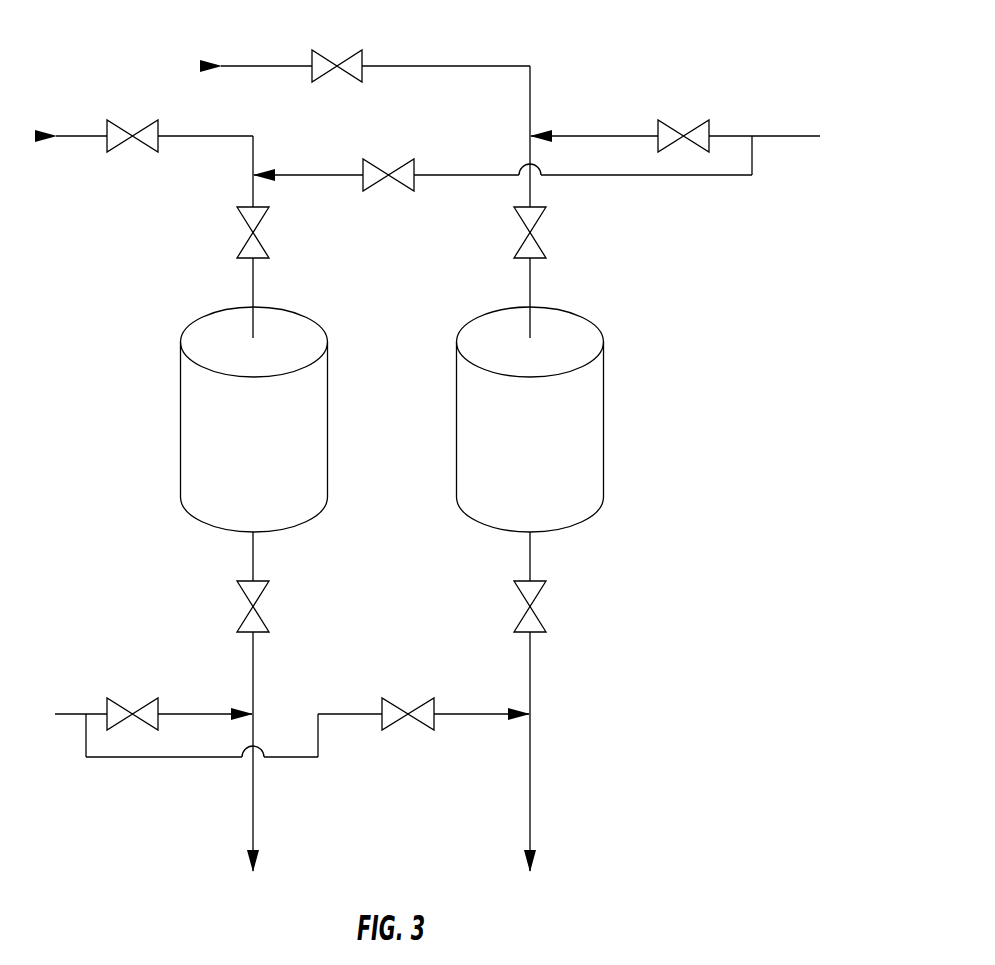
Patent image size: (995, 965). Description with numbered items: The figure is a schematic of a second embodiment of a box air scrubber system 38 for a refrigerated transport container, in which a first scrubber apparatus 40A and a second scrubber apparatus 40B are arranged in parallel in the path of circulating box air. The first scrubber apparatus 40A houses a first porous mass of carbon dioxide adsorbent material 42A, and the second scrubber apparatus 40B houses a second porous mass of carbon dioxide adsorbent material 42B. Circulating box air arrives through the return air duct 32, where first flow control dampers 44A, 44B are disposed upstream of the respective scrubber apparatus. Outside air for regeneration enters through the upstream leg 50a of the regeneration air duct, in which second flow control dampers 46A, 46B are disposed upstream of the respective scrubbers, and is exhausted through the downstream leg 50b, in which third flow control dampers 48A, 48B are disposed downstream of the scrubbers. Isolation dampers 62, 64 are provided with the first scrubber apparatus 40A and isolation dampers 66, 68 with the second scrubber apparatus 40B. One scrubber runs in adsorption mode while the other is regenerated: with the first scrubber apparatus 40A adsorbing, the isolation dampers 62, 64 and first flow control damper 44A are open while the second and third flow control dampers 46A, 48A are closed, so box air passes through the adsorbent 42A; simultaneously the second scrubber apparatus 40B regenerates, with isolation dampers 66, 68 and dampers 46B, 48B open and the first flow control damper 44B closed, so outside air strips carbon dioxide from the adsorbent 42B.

The return air duct 32 is at (777, 137).
The scrubber system 38 is at (666, 444).
The first scrubber apparatus 40A is at (179, 413).
The second scrubber apparatus 40B is at (604, 400).
The first porous mass of carbon dioxide adsorbent material 42A is at (188, 488).
The second porous mass of carbon dioxide adsorbent material 42B is at (595, 487).
The first flow control damper 44A is at (408, 189).
The first flow control damper 44B is at (697, 125).
The second flow control damper 46A is at (142, 703).
The second flow control damper 46B is at (420, 705).
The third flow control damper 48A is at (148, 125).
The third flow control damper 48B is at (348, 57).
The upstream leg of the regeneration air duct 50a is at (75, 714).
The downstream leg of the regeneration air duct 50b is at (532, 99).
The isolation damper 62 is at (270, 627).
The isolation damper 64 is at (270, 250).
The isolation damper 66 is at (547, 627).
The isolation damper 68 is at (547, 250).